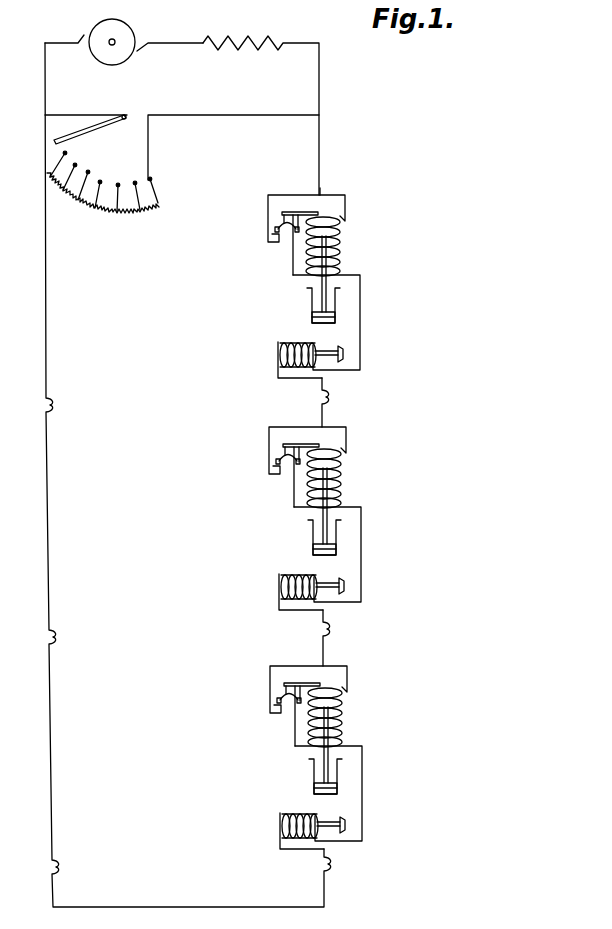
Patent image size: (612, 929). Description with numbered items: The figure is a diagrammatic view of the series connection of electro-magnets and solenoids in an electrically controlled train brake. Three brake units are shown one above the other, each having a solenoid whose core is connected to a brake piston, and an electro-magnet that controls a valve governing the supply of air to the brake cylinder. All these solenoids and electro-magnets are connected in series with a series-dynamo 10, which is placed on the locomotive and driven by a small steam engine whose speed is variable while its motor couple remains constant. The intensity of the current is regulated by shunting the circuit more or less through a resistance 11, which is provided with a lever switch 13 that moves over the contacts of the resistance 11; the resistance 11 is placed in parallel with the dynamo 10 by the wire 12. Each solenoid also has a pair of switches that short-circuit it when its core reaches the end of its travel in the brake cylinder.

The series-dynamo 10 is at (127, 29).
The resistance 11 is at (113, 216).
The wire 12 is at (78, 115).
The lever switch 13 is at (96, 129).